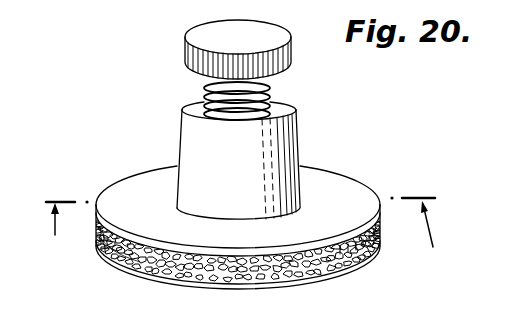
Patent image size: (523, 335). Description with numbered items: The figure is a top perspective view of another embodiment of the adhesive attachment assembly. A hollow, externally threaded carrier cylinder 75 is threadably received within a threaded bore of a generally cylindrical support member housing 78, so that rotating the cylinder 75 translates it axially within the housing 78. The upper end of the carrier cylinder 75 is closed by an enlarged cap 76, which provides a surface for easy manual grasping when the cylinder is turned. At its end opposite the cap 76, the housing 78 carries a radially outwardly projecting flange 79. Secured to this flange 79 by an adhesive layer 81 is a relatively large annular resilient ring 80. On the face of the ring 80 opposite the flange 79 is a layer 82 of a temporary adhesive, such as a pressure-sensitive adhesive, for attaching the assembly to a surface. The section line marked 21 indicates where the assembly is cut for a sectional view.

The enlarged cap 76 is at (192, 68).
The carrier cylinder 75 is at (203, 97).
The support member housing 78 is at (192, 147).
The flange 79 is at (328, 180).
The annular resilient ring 80 is at (365, 252).
The adhesive layer 81 is at (115, 262).
The layer of temporary adhesive 82 is at (322, 278).
The section line 21- 21 is at (243, 226).